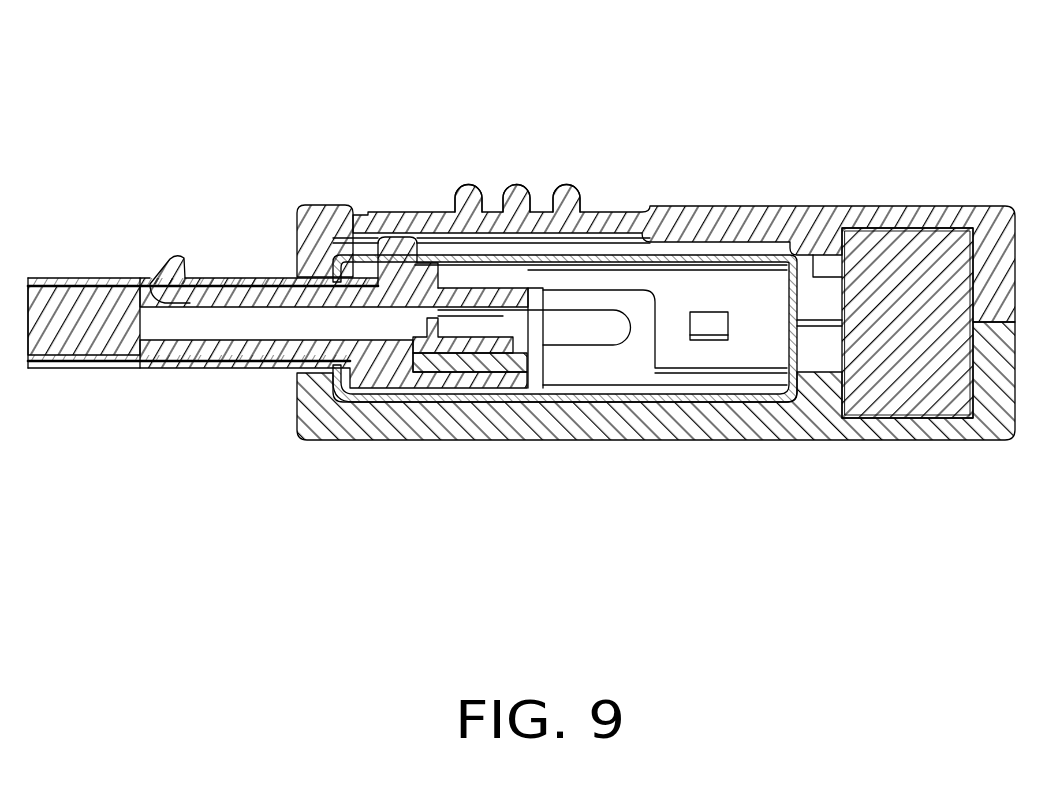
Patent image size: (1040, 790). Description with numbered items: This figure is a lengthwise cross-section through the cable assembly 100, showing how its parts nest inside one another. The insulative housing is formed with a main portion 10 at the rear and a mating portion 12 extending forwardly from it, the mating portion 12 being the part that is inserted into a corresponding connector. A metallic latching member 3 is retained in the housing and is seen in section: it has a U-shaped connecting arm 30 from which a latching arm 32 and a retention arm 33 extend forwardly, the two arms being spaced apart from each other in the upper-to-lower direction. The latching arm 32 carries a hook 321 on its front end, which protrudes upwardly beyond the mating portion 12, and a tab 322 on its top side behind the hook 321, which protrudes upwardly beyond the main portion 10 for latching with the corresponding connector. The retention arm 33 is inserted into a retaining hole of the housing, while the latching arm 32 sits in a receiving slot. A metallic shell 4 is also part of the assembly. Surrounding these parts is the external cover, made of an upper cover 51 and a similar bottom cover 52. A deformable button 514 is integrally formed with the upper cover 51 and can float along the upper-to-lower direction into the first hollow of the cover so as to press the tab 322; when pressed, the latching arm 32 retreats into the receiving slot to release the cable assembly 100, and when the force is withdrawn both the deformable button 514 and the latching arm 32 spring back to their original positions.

The cable assembly 100 is at (539, 88).
The metallic latching member 3 is at (528, 288).
The metallic shell 4 is at (92, 283).
The main portion 10 is at (383, 363).
The mating portion 12 is at (82, 332).
The connecting arm 30 is at (638, 328).
The latching arm 32 is at (277, 293).
The hook 321 is at (173, 268).
The tab 322 is at (384, 232).
The retention arm 33 is at (470, 368).
The upper cover 51 is at (812, 233).
The bottom cover 52 is at (738, 420).
The deformable button 514 is at (486, 222).